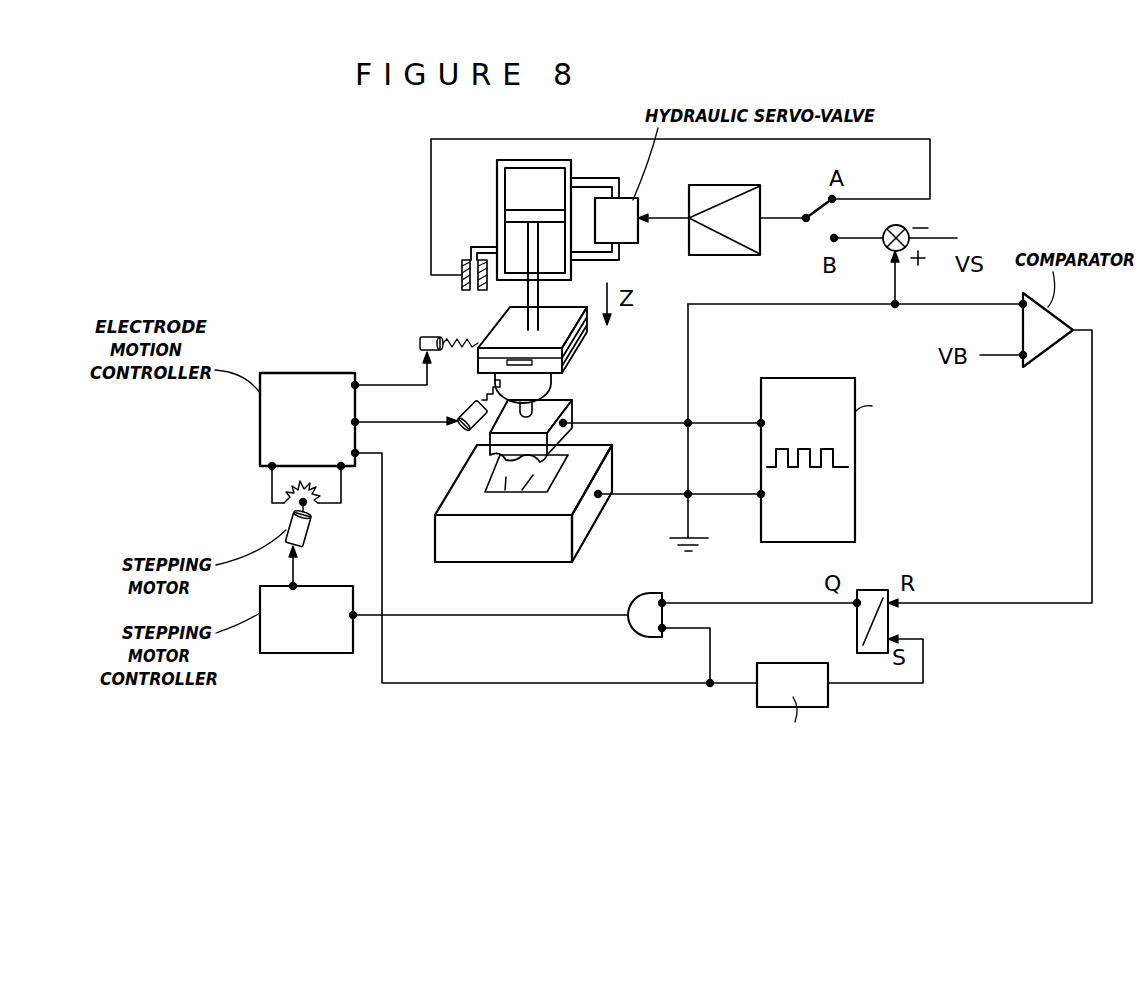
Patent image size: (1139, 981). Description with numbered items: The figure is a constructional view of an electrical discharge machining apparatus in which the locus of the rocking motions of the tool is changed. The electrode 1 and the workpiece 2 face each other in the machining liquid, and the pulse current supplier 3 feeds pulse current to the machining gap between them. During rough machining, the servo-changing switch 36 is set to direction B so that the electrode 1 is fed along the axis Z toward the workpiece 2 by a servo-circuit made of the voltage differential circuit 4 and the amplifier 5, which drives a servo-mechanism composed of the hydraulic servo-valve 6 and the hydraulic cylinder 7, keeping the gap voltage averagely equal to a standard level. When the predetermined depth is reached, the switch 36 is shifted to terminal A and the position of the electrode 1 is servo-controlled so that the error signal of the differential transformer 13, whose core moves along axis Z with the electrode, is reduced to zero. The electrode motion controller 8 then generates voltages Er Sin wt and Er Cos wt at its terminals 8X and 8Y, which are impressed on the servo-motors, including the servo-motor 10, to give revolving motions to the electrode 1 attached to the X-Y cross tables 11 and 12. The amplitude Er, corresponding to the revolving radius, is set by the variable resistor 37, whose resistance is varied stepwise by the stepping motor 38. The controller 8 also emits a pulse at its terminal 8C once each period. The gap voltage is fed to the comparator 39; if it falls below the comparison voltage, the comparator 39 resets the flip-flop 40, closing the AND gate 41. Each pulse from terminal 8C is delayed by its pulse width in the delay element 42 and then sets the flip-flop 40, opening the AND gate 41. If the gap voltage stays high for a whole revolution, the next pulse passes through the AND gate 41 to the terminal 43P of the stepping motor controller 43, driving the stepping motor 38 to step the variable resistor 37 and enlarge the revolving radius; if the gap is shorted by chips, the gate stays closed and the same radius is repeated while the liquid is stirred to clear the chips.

The electrode 1 is at (568, 415).
The workpiece 2 is at (602, 481).
The pulse current supplier 3 is at (832, 490).
The voltage differential circuit 4 is at (908, 226).
The amplifier 5 is at (710, 243).
The hydraulic servo-valve 6 is at (603, 198).
The hydraulic cylinder 7 is at (535, 185).
The electrode motion controller 8 is at (283, 372).
The terminal 8X is at (358, 382).
The terminal 8Y is at (357, 421).
The terminal 8C is at (357, 452).
The servo-motor 10 is at (461, 425).
The X-Y cross table 11 is at (480, 360).
The X-Y cross table 12 is at (575, 345).
The differential transformer 13 is at (462, 268).
The servo-changing switch 36 is at (821, 224).
The variable resistor 37 is at (297, 497).
The stepping motor 38 is at (308, 526).
The comparator 39 is at (1043, 352).
The flip-flop 40 is at (866, 588).
The AND gate 41 is at (640, 615).
The delay element 42 is at (790, 680).
The stepping motor controller 43 is at (278, 643).
The terminal 43P is at (356, 618).